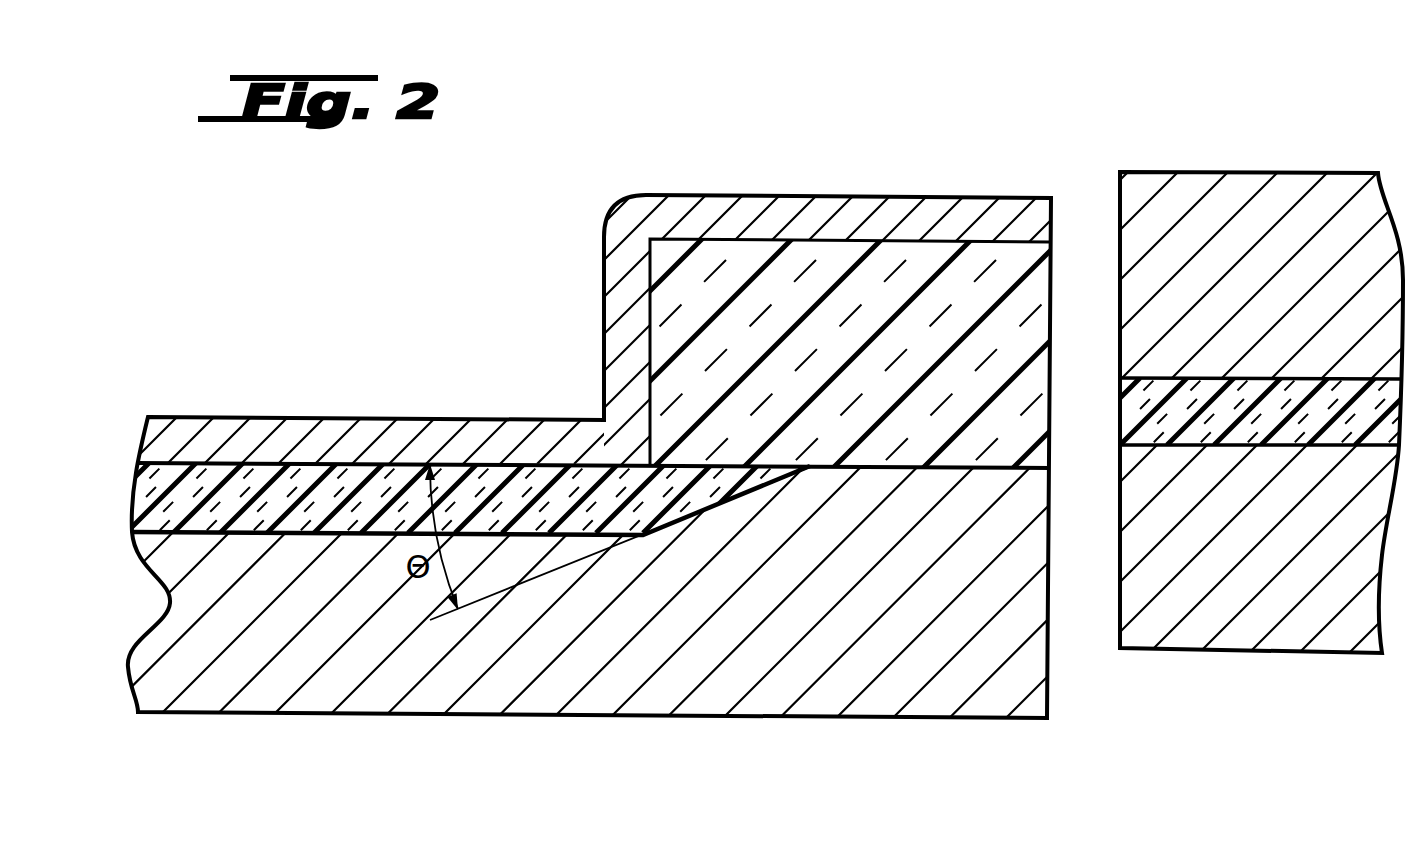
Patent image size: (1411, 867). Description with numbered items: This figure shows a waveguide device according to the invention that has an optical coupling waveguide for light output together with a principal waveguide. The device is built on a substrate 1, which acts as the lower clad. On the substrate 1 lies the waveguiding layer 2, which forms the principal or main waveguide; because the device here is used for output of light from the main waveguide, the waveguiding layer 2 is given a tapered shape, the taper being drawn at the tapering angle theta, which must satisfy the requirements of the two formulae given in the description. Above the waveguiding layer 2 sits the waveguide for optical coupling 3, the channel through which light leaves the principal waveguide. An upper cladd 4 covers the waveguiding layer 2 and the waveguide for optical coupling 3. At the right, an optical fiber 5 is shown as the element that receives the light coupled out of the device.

The substrate 1 is at (653, 692).
The waveguiding layer 2 is at (258, 483).
The waveguide for optical coupling 3 is at (825, 277).
The upper cladd 4 is at (360, 443).
The optical fiber 5 is at (1232, 197).